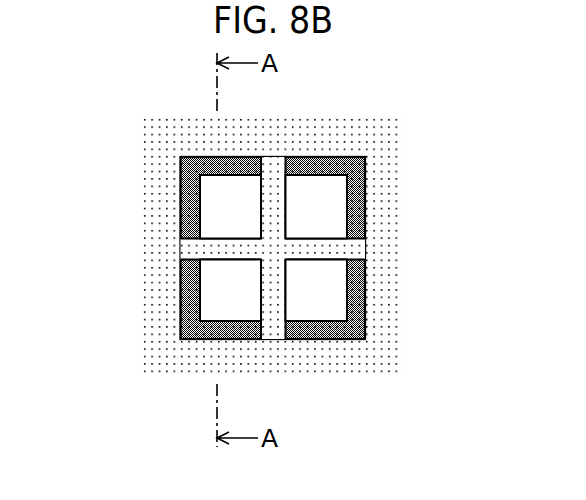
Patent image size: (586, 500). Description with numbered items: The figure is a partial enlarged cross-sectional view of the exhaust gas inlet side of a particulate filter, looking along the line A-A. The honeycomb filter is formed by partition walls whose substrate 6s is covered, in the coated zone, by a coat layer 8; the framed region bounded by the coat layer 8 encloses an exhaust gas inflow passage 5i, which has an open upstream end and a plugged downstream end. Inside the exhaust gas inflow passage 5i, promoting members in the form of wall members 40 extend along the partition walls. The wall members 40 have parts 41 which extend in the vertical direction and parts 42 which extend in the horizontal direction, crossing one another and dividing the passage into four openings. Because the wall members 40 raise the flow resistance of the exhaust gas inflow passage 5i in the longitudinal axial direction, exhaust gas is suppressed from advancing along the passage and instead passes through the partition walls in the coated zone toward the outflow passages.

The exhaust gas inflow passage 5i is at (220, 192).
The partition wall substrate 6s is at (383, 304).
The coat layer 8 is at (358, 193).
The wall member 40 is at (258, 298).
The vertically extending part 41 is at (287, 304).
The horizontally extending part 42 is at (320, 237).